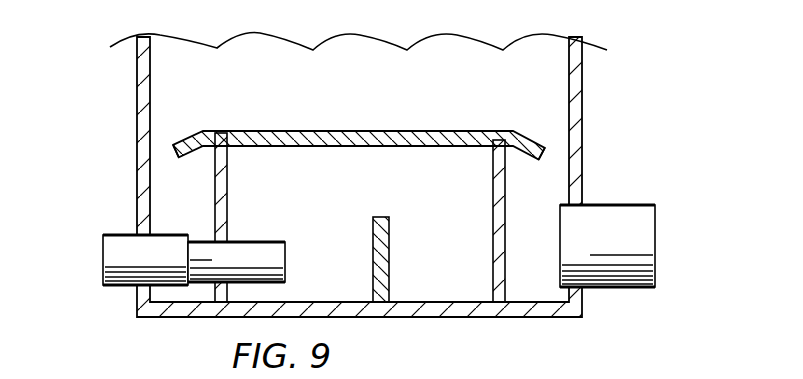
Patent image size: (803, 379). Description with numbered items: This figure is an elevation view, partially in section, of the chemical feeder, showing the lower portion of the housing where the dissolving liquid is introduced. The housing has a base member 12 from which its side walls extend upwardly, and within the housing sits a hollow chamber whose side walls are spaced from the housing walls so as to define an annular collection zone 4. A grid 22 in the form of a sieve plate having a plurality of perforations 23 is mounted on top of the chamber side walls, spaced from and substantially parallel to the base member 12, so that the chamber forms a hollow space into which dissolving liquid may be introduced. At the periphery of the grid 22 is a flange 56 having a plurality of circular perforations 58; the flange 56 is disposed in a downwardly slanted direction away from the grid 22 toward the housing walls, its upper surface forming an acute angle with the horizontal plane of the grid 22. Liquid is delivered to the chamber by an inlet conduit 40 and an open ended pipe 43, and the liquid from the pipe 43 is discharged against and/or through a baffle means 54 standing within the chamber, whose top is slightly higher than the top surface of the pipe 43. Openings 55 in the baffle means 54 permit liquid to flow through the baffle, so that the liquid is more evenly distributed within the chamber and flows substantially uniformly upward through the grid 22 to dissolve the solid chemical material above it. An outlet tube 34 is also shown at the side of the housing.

The collection zone 4 is at (534, 251).
The base member 12 is at (532, 320).
The grid 22 is at (425, 131).
The perforations 23 is at (380, 131).
The outlet tube 34 is at (618, 218).
The inlet conduit 40 is at (122, 240).
The open ended pipe 43 is at (250, 246).
The baffle means 54 is at (379, 216).
The openings 55 is at (389, 262).
The flange 56 is at (180, 141).
The perforations 58 is at (189, 154).